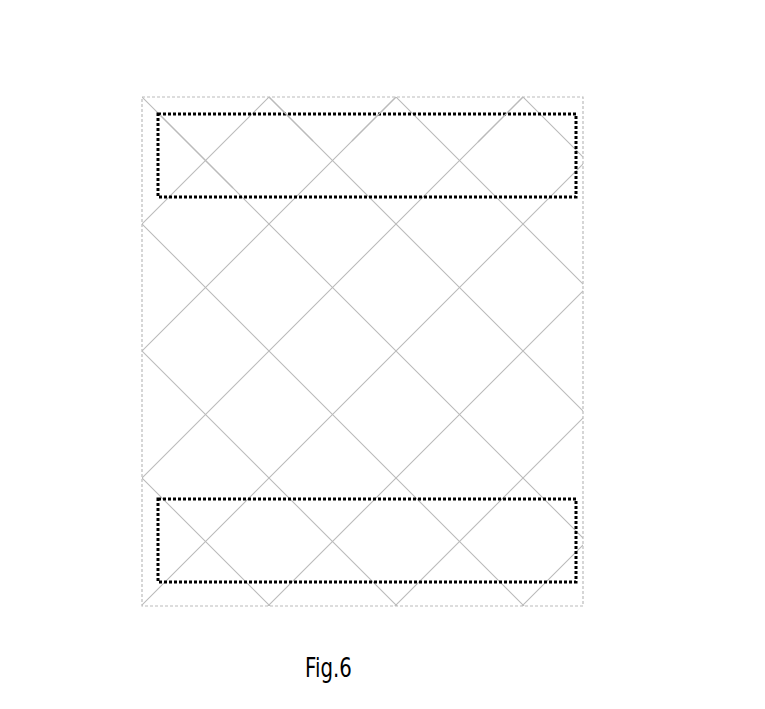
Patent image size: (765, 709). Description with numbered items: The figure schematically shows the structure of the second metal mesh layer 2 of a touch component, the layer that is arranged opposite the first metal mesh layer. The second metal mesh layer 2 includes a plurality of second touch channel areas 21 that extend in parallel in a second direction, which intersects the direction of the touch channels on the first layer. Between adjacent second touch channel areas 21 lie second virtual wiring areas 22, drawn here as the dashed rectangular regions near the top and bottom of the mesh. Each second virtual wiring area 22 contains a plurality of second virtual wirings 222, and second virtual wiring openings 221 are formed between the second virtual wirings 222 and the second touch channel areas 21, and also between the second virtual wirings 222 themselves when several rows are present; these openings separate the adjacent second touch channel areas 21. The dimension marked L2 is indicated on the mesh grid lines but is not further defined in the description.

The second metal mesh layer 2 is at (142, 430).
The second touch channel area 21 is at (543, 360).
The second virtual wiring area 22 is at (563, 150).
The second virtual wiring opening 221 is at (363, 127).
The second virtual wiring 222 is at (445, 147).
The thread segment length L2 is at (313, 142).